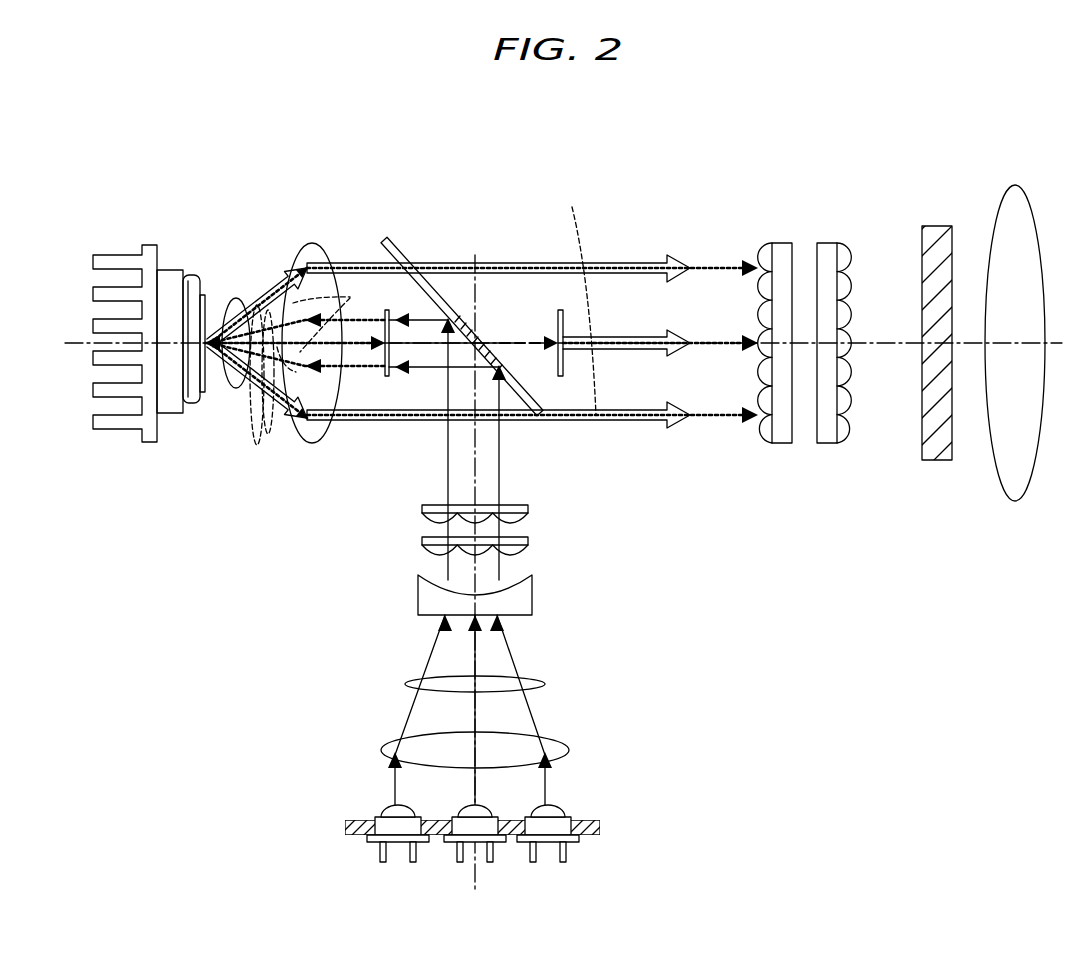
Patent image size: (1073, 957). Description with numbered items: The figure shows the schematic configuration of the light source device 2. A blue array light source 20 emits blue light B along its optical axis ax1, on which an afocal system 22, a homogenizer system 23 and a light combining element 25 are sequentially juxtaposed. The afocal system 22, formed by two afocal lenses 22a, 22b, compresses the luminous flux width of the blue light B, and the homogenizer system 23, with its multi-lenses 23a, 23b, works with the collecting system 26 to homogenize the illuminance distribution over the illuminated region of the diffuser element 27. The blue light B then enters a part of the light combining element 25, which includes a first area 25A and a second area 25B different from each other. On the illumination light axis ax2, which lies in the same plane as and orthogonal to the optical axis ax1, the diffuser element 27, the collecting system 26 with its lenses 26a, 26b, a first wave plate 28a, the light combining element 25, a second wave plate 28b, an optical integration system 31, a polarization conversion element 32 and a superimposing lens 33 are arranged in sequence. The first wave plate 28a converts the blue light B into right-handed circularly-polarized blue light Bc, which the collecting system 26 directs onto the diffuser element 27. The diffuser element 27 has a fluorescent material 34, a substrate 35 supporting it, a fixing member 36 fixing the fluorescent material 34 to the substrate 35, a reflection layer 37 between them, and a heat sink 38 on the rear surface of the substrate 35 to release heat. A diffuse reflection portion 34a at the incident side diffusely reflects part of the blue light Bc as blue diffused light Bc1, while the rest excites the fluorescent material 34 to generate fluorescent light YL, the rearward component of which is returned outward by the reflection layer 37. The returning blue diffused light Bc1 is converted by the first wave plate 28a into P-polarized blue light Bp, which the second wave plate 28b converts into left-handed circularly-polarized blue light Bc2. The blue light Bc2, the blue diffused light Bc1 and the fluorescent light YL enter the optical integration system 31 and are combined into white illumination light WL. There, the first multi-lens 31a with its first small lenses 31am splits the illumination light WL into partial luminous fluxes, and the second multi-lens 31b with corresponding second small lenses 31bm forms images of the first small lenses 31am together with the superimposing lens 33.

The light source device 2 is at (945, 178).
The blue array light source 20 is at (616, 846).
The afocal system 22 is at (539, 671).
The afocal lens 22a is at (552, 740).
The afocal lens 22b is at (533, 600).
The homogenizer system 23 is at (560, 547).
The multi-lens 23a is at (530, 555).
The multi-lens 23b is at (530, 520).
The light combining element 25 is at (461, 313).
The first area 25A is at (472, 333).
The second area 25B is at (421, 284).
The collecting system 26 is at (282, 275).
The lens 26a is at (291, 246).
The lens 26b is at (233, 298).
The diffuser element 27 is at (156, 343).
The first wave plate 28a is at (387, 380).
The second wave plate 28b is at (563, 378).
The optical integration system 31 is at (808, 377).
The first multi-lens 31a is at (769, 354).
The second multi-lens 31b is at (845, 354).
The first small lens 31am is at (762, 255).
The second small lens 31bm is at (843, 253).
The polarization conversion element 32 is at (948, 462).
The superimposing lens 33 is at (1030, 460).
The fluorescent material 34 is at (192, 275).
The diffuse reflection portion 34a is at (204, 388).
The substrate 35 is at (167, 405).
The fixing member 36 is at (197, 414).
The reflection layer 37 is at (177, 270).
The heat sink 38 is at (148, 245).
The optical axis ax1 is at (478, 878).
The illumination light axis ax2 is at (68, 345).
The blue light B is at (448, 395).
The blue light Bc is at (295, 343).
The blue diffused light Bc1 is at (419, 333).
The blue light Bc2 is at (686, 337).
The blue light Bp is at (508, 338).
The fluorescent light YL is at (607, 415).
The white illumination light WL is at (532, 277).